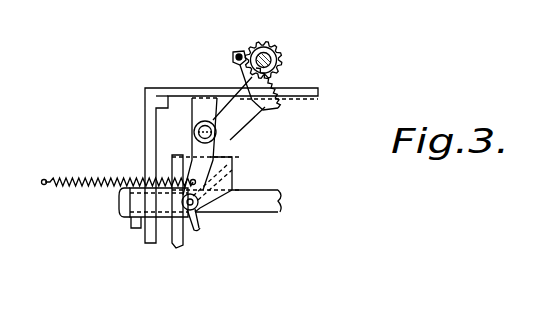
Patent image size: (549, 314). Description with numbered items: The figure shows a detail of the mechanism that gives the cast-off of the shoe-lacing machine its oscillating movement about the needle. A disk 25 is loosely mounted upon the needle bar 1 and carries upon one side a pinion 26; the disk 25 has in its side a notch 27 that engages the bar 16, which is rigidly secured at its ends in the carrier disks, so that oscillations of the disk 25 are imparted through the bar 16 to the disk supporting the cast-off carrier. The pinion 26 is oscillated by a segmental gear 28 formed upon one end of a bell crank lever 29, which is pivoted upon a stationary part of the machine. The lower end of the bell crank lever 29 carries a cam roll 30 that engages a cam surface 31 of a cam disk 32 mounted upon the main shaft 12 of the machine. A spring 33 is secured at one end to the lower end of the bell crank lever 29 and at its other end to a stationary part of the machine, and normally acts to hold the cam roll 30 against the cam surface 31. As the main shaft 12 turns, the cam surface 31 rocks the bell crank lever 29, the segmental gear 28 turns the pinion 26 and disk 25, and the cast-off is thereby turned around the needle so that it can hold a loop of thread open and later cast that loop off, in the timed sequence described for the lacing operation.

The needle bar 1 is at (279, 68).
The main shaft 12 is at (255, 204).
The bar 16 is at (235, 59).
The disk 25 is at (250, 42).
The pinion 26 is at (282, 52).
The notch 27 is at (237, 52).
The segmental gear 28 is at (277, 112).
The bell crank lever 29 is at (230, 120).
The cam roll 30 is at (204, 223).
The cam surface 31 is at (233, 160).
The cam disk 32 is at (180, 250).
The spring 33 is at (117, 176).